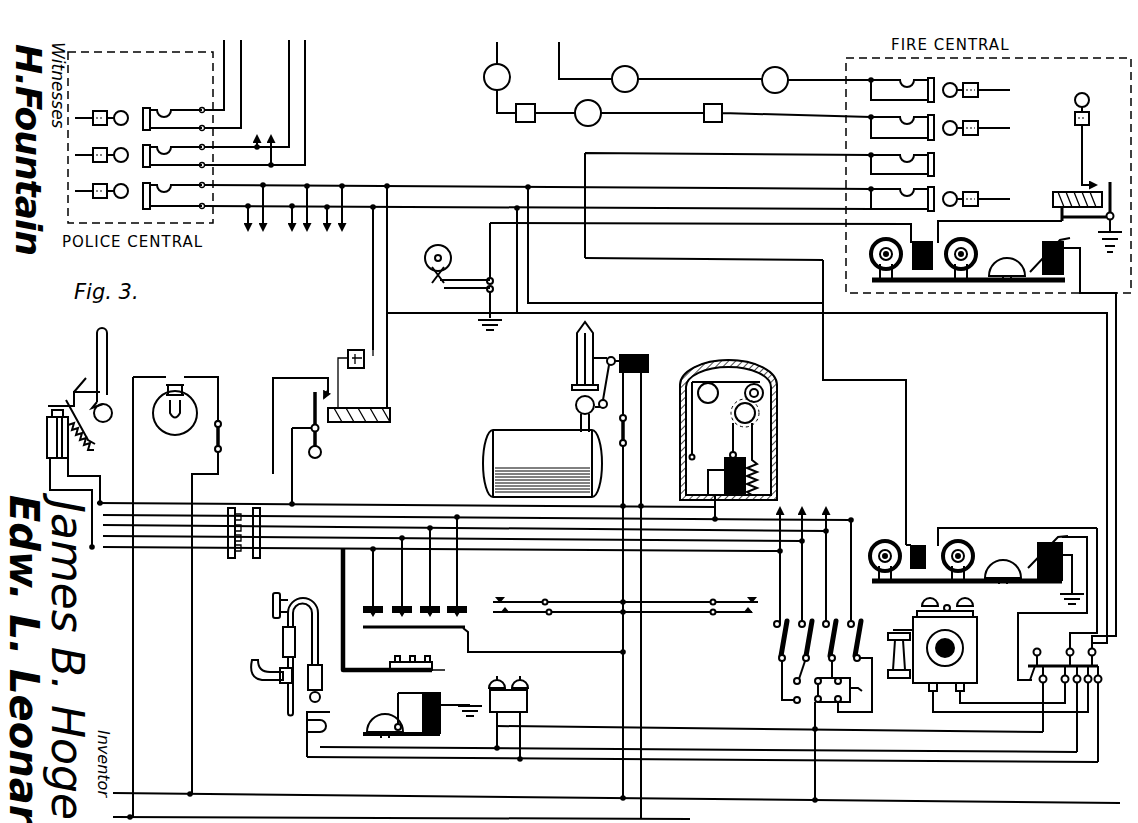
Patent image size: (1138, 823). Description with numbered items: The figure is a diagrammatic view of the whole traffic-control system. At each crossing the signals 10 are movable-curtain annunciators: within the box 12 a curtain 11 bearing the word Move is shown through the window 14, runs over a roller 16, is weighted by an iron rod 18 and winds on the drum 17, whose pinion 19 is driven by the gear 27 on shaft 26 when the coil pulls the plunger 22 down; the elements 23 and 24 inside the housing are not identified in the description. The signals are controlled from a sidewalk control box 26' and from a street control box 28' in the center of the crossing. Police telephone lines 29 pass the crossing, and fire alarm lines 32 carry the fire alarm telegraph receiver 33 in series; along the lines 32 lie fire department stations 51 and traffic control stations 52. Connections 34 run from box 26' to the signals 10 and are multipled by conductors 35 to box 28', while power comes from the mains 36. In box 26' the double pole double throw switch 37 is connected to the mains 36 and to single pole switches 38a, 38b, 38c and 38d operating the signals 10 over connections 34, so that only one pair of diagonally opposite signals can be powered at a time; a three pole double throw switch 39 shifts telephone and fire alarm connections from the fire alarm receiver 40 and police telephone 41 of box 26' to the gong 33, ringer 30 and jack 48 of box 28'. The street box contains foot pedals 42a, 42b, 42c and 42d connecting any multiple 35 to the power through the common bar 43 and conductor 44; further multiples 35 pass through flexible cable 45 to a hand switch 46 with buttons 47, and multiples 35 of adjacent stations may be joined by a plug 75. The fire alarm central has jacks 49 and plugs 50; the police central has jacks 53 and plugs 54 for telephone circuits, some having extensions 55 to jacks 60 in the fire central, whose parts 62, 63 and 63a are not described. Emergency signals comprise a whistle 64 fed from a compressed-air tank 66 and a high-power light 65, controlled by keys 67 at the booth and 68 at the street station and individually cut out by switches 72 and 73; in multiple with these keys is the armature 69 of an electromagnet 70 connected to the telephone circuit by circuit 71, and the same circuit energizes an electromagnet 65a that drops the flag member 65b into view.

The signal 10 is at (705, 362).
The curtain 11 is at (735, 380).
The box 12 is at (776, 468).
The window 14 is at (683, 422).
The roller 16 is at (690, 372).
The drum 17 is at (760, 366).
The iron rod 18 is at (690, 461).
The pinion 19 is at (765, 396).
The plunger 22 is at (730, 457).
The spring 23 is at (770, 486).
The opening 24 is at (806, 448).
The shaft 26 is at (761, 413).
The control box 26' is at (983, 537).
The gear 27 is at (757, 413).
The street control box 28' is at (406, 486).
The police telephone lines 29 is at (410, 199).
The telephone ringer 30 is at (528, 706).
The fire alarm lines 32 is at (714, 75).
The fire gong 33 is at (1066, 273).
The connections 34 is at (822, 510).
The conductors 35 is at (188, 540).
The power mains 36 is at (889, 820).
The double pole double throw switch 37 is at (283, 641).
The single pole single throw switch 38a is at (773, 624).
The single pole single throw switch 38b is at (798, 650).
The single pole single throw switch 38c is at (828, 658).
The single pole single throw switch 38d is at (878, 612).
The three pole double throw switch 39 is at (1028, 666).
The fire alarm receiver 40 is at (1003, 560).
The police telephone 41 is at (976, 630).
The foot pedal 42a is at (368, 606).
The foot pedal 42b is at (408, 606).
The foot pedal 42c is at (434, 606).
The foot pedal 42d is at (466, 612).
The common bar 43 is at (470, 630).
The conductor 44 is at (538, 653).
The flexible cable 45 is at (345, 660).
The hand controlled switch 46 is at (436, 672).
The buttons 47 is at (410, 660).
The jack 48 is at (306, 718).
The jacks 49 is at (938, 89).
The plugs 50 is at (977, 128).
The fire department stations 51 is at (501, 72).
The traffic control stations 52 is at (538, 111).
The jacks 53 is at (146, 111).
The plugs 54 is at (82, 133).
The extensions 55 is at (710, 206).
The jacks 60 is at (937, 197).
The line wire 62 is at (716, 227).
The relay 63 is at (975, 262).
The switch 63a is at (1073, 120).
The emergency whistle 64 is at (576, 351).
The emergency light 65 is at (186, 386).
The electromagnet 65a is at (47, 434).
The drop member 65b is at (105, 373).
The tank of compressed air 66 is at (528, 432).
The manual control key 67 is at (713, 604).
The manual control key 68 is at (538, 605).
The armature 69 is at (313, 408).
The electro-magnet 70 is at (359, 400).
The circuit 71 is at (368, 286).
The single pole switch 72 is at (628, 432).
The single pole switch 73 is at (220, 447).
The plug 75 is at (244, 562).